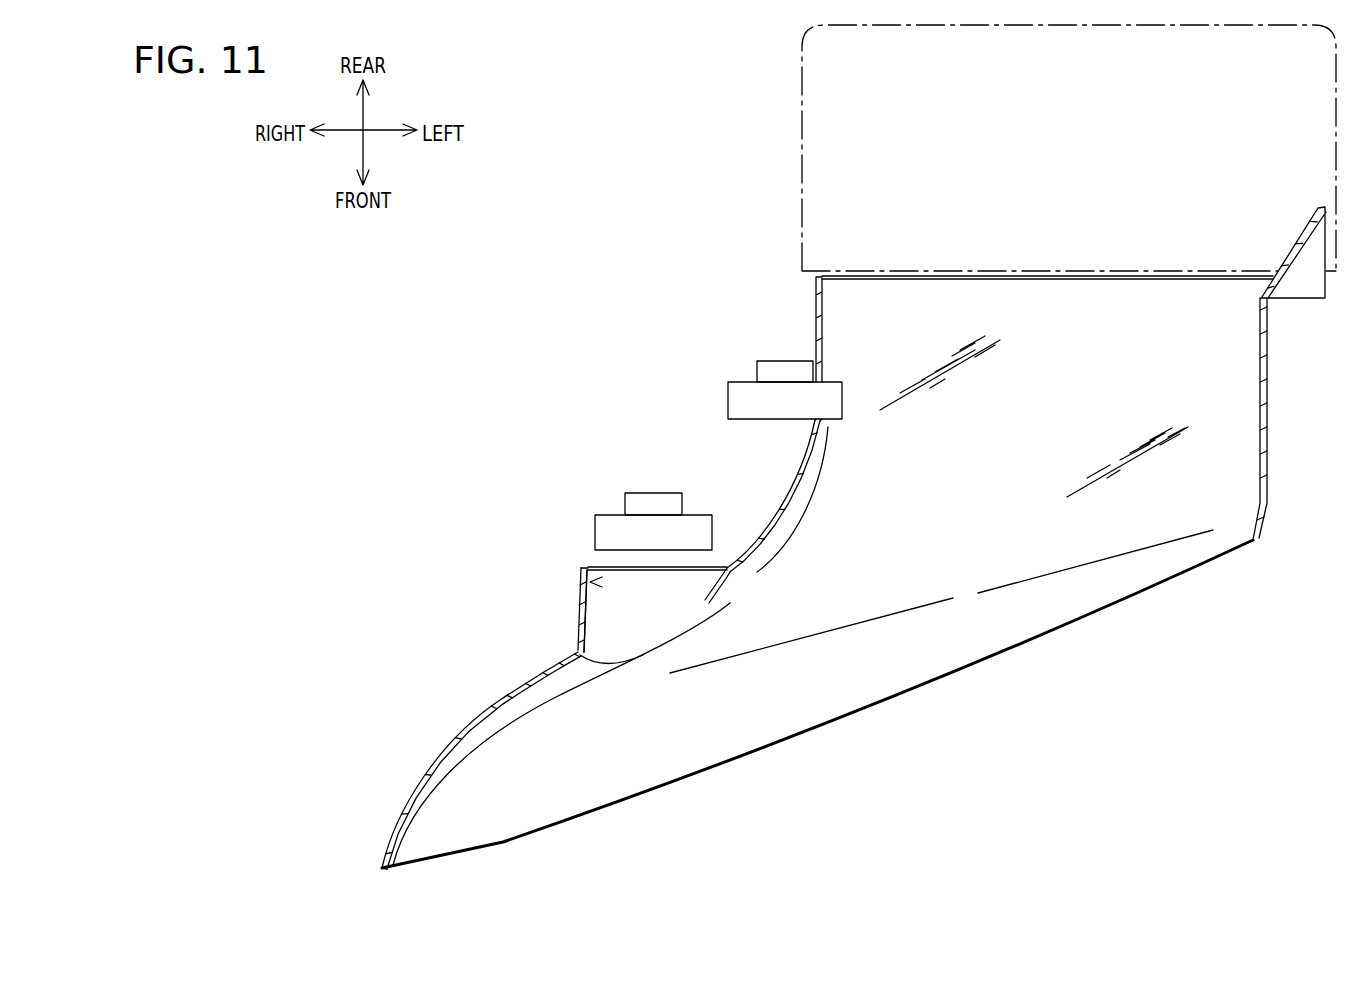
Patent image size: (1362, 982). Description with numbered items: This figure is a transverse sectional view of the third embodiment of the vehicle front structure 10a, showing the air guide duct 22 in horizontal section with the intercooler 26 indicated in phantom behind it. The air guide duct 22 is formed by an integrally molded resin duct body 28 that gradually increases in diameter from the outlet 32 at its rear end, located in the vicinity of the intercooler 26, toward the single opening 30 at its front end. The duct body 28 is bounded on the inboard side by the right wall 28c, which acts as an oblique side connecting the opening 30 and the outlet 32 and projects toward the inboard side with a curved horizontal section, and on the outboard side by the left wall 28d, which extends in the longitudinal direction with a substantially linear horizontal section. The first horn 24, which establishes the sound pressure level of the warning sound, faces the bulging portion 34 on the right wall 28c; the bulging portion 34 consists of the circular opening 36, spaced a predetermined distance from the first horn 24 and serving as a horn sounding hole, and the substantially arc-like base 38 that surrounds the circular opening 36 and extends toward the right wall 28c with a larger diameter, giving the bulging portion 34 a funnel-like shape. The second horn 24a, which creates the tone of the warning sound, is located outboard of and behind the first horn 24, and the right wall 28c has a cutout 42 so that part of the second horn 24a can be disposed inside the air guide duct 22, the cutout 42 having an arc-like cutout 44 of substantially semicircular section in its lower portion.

The vehicle 10a is at (606, 147).
The air guide duct 22 is at (871, 735).
The first horn 24 is at (636, 480).
The second horn 24a is at (753, 349).
The intercooler 26 is at (797, 152).
The duct body 28 is at (718, 778).
The right wall 28c is at (815, 327).
The left wall 28d is at (1268, 415).
The opening 30 is at (385, 877).
The outlet 32 is at (817, 275).
The bulging portion 34 is at (570, 609).
The circular opening 36 is at (592, 580).
The base 38 is at (578, 617).
The cutout 42 is at (790, 478).
The arc-like cutout 44 is at (805, 422).